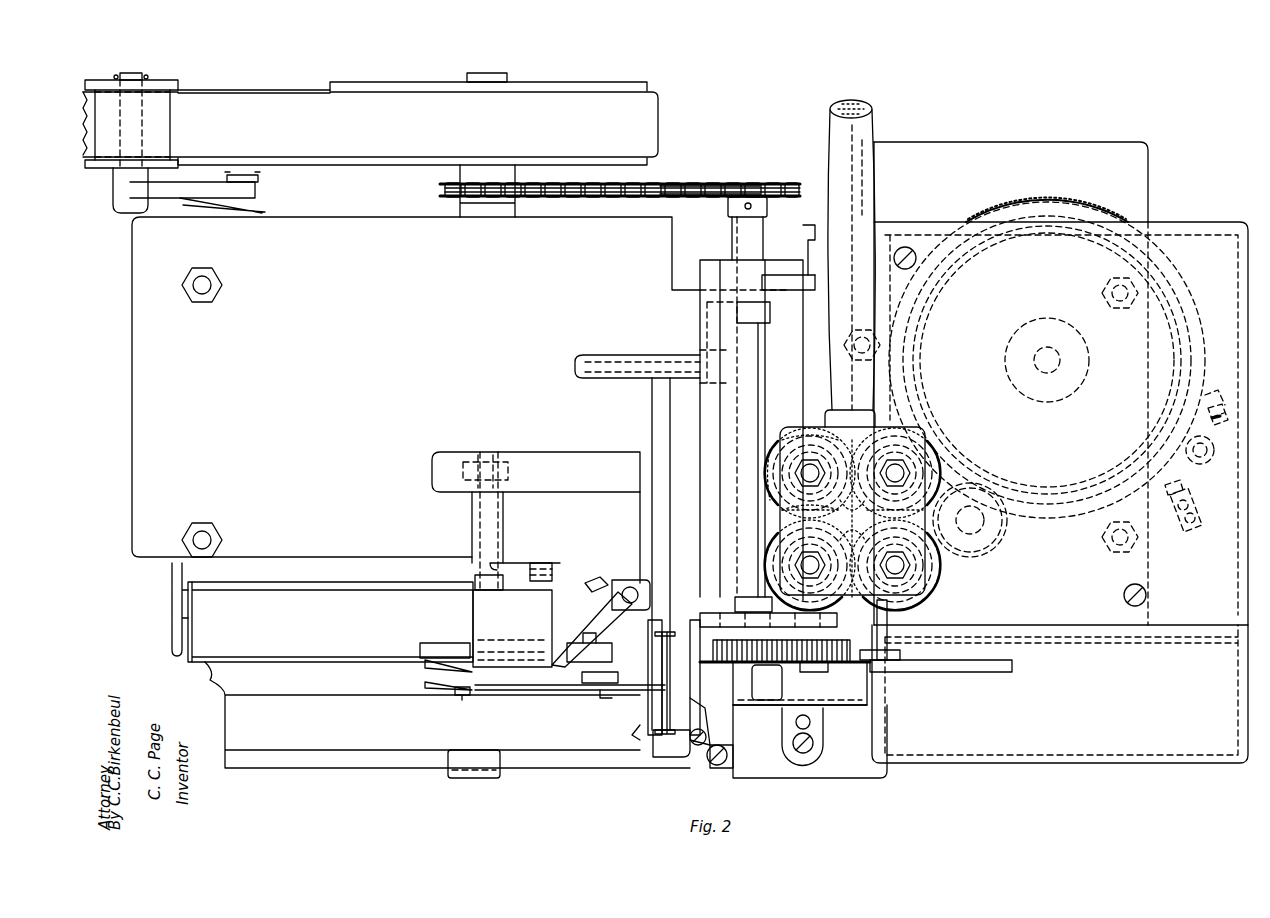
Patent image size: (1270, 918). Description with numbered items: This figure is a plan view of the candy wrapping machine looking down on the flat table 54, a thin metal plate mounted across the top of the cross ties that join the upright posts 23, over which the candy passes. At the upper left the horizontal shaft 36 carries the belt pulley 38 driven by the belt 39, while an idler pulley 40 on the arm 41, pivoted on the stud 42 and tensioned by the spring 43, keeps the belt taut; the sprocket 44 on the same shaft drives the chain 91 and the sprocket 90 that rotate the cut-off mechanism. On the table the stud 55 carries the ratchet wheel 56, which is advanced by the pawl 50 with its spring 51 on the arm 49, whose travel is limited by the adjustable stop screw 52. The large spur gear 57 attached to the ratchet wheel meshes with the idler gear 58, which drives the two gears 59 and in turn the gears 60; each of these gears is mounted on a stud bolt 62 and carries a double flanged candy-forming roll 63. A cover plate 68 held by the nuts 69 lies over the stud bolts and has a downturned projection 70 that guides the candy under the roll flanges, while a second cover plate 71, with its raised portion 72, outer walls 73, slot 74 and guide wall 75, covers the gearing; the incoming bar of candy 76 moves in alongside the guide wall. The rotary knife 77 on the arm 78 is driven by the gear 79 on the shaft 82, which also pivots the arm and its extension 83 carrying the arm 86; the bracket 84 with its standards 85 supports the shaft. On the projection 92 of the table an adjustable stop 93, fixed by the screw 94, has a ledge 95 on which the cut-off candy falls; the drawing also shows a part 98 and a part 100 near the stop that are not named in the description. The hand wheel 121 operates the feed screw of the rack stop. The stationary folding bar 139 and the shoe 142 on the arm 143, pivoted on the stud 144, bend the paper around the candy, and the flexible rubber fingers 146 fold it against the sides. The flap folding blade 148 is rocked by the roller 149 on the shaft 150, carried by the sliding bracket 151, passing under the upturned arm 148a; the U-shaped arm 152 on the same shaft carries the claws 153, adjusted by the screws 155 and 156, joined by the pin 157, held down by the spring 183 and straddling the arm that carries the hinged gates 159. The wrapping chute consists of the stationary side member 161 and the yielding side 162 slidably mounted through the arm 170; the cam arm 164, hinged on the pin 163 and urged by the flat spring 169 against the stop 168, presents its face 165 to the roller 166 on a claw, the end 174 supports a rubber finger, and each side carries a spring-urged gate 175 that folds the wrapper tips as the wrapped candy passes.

The upright post 23 is at (212, 298).
The horizontal shaft 36 is at (484, 80).
The belt pulley 38 is at (598, 90).
The belt 39 is at (370, 127).
The idler pulley 40 is at (154, 86).
The arm 41 is at (210, 193).
The stud 42 is at (252, 182).
The spring 43 is at (266, 216).
The sprocket 44 is at (442, 192).
The arm 49 is at (1198, 465).
The pawl 50 is at (1208, 372).
The spring 51 is at (1214, 406).
The adjustable stop screw 52 is at (1186, 496).
The flat table 54 is at (416, 387).
The stud 55 is at (1046, 357).
The ratchet wheel 56 is at (1058, 212).
The large spur gear 57 is at (1088, 485).
The idler gear 58 is at (1010, 533).
The gear 59 is at (935, 455).
The gear 60 is at (780, 505).
The stud bolt 62 is at (852, 519).
The double flanged candy-forming roll 63 is at (880, 538).
The cover plate 68 is at (935, 572).
The nut 69 is at (905, 545).
The downturned projection 70 is at (852, 425).
The cover plate 71 is at (1046, 383).
The raised portion 72 is at (1124, 689).
The outer wall 73 is at (1248, 590).
The slot 74 is at (968, 672).
The guide wall 75 is at (810, 242).
The bar of candy 76 is at (851, 255).
The rotary knife 77 is at (906, 658).
The arm 78 is at (830, 618).
The gear 79 is at (850, 651).
The shaft 82 is at (755, 423).
The extension 83 is at (700, 302).
The bracket 84 is at (707, 339).
The standard 85 is at (753, 457).
The arm 86 is at (788, 273).
The sprocket 90 is at (738, 190).
The chain 91 is at (692, 184).
The projection 92 is at (810, 741).
The adjustable stop 93 is at (843, 705).
The screw 94 is at (793, 744).
The ledge 95 is at (800, 683).
The rod 98 is at (888, 617).
The block 100 is at (769, 682).
The hand wheel 121 is at (172, 588).
The stationary folding bar 139 is at (712, 721).
The shoe 142 is at (713, 677).
The arm 143 is at (662, 527).
The stud 144 is at (576, 362).
The flexible rubber finger 146 is at (660, 625).
The flap folding blade 148 is at (640, 527).
The arm 148a is at (575, 447).
The roller 149 is at (466, 470).
The shaft 150 is at (478, 585).
The bracket 151 is at (512, 566).
The U-shaped arm 152 is at (512, 628).
The claw 153 is at (672, 688).
The screw 155 is at (472, 692).
The screw 156 is at (622, 702).
The pin 157 is at (676, 683).
The gate 159 is at (630, 734).
The stationary side member 161 is at (330, 622).
The yielding side 162 is at (447, 715).
The pin 163 is at (627, 588).
The cam arm 164 is at (612, 594).
The face 165 is at (445, 651).
The roller 166 is at (589, 652).
The stop 168 is at (592, 624).
The flat spring 169 is at (600, 573).
The arm 170 is at (474, 764).
The end 174 is at (705, 755).
The spring-urged gate 175 is at (425, 672).
The spring 183 is at (548, 570).